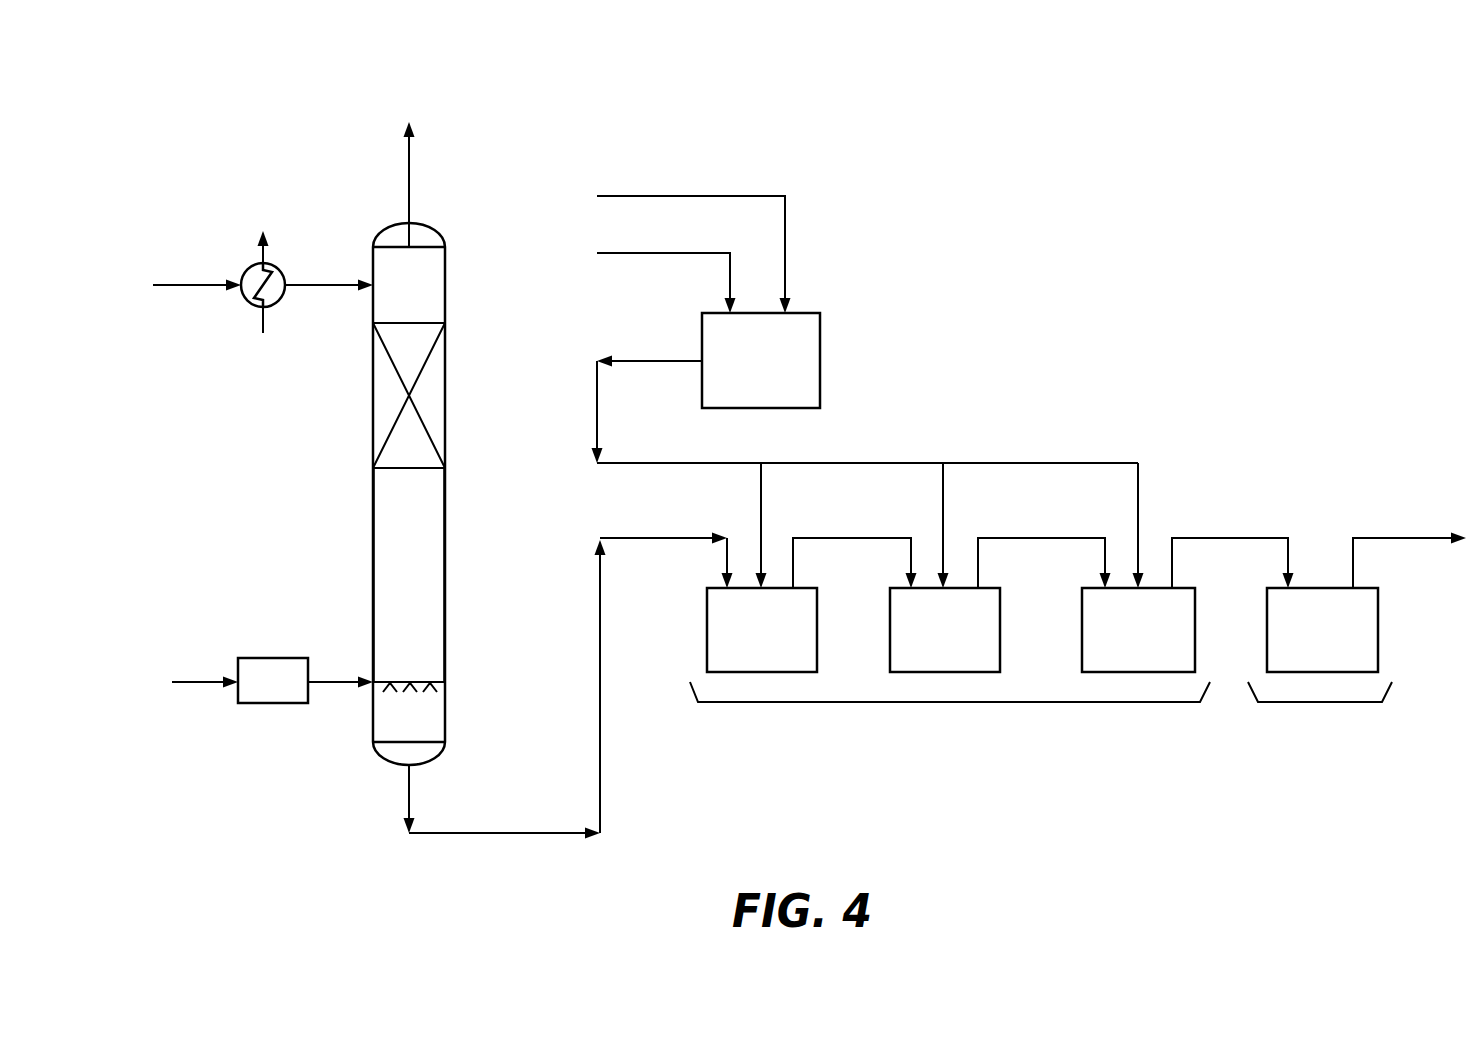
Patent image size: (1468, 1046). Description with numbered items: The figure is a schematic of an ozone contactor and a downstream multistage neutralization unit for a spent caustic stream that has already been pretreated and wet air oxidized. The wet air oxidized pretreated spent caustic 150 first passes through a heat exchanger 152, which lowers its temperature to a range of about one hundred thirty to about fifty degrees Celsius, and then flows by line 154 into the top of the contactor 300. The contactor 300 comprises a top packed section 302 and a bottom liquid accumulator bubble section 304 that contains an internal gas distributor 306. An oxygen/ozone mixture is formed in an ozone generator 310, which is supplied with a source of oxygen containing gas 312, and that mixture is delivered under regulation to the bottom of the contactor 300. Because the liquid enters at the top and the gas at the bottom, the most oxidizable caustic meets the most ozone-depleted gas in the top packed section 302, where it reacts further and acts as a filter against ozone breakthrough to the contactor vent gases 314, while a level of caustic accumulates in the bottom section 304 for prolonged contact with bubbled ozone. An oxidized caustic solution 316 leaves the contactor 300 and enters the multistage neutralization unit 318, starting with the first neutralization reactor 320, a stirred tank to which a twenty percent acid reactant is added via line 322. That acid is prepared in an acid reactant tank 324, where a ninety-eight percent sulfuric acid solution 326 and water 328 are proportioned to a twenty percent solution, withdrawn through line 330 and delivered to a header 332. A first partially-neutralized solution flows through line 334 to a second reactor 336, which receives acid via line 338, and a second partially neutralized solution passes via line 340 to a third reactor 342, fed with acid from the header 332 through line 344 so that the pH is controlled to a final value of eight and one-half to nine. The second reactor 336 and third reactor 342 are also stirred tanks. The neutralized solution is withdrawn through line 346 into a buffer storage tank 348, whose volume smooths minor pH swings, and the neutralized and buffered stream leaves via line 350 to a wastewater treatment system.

The wet air oxidized pretreated spent caustic 150 is at (178, 283).
The heat exchanger 152 is at (247, 301).
The line 154 is at (324, 283).
The contactor 300 is at (460, 360).
The top packed section 302 is at (447, 413).
The bottom liquid accumulator bubble section 304 is at (447, 596).
The gas distributor 306 is at (420, 682).
The ozone generator 310 is at (270, 706).
The source of oxygen containing gas 312 is at (197, 681).
The contactor vent gases 314 is at (410, 180).
The oxidized caustic solution 316 is at (487, 835).
The multistage neutralization unit 318 is at (975, 703).
The first neutralization reactor 320 is at (762, 630).
The line 322 is at (762, 500).
The acid reactant tank 324 is at (822, 343).
The 98% sulfuric acid solution 326 is at (715, 196).
The water 328 is at (640, 252).
The line 330 is at (648, 360).
The header 332 is at (868, 463).
The line 334 is at (838, 538).
The second reactor 336 is at (945, 630).
The line 338 is at (944, 500).
The line 340 is at (1020, 538).
The third reactor 342 is at (1138, 630).
The line 344 is at (1139, 500).
The line 346 is at (1215, 538).
The buffer storage tank 348 is at (1322, 630).
The line 350 is at (1395, 538).